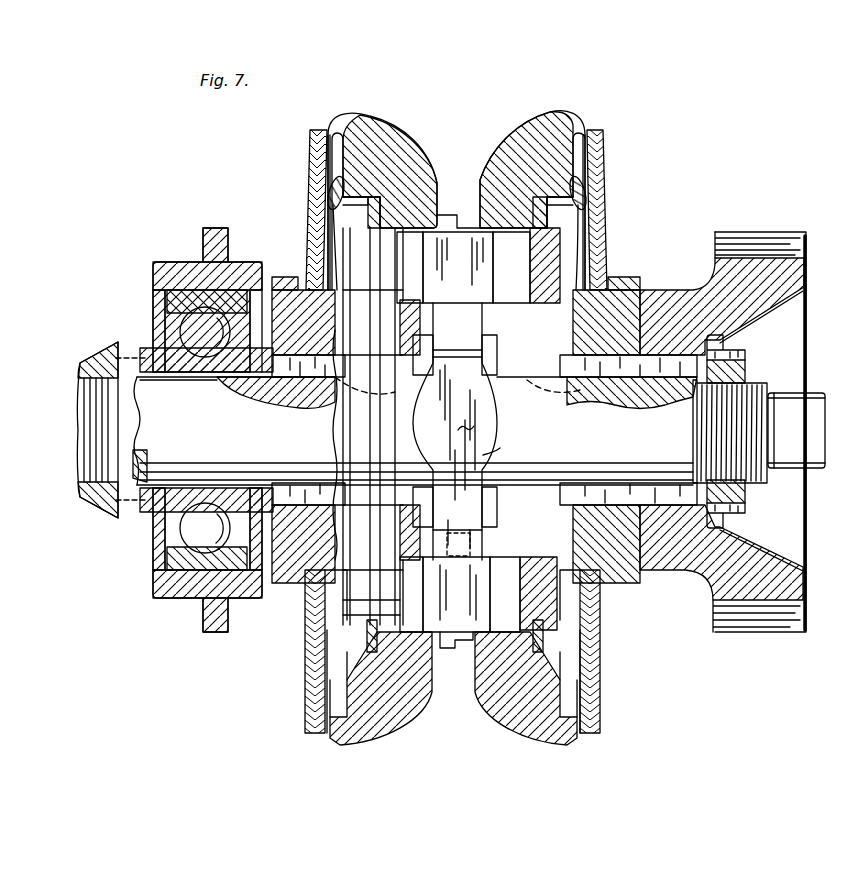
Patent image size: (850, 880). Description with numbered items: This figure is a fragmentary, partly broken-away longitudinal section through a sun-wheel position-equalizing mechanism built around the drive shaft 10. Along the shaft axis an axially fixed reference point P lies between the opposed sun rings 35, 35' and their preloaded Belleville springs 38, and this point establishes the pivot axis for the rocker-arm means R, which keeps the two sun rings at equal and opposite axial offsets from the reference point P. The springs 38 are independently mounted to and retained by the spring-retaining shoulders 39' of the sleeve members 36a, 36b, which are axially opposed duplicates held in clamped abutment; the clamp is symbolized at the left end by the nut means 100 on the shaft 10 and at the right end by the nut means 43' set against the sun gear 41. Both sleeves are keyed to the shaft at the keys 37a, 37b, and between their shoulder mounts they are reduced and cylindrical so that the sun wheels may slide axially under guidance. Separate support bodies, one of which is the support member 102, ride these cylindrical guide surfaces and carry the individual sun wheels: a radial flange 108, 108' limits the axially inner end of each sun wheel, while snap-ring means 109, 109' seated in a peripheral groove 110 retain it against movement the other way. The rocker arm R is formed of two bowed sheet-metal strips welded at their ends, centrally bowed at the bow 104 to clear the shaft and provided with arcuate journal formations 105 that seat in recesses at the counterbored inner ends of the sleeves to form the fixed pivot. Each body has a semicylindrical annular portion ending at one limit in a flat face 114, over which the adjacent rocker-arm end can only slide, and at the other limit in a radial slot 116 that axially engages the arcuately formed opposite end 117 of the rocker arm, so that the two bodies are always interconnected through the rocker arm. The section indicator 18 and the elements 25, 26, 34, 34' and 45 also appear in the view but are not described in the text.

The drive shaft 10 is at (184, 432).
The section line 18- 18 is at (430, 82).
The bearing housing 25 is at (203, 238).
The ball bearing 26 is at (176, 328).
The cup wall 34 is at (452, 212).
The roller 34' is at (457, 160).
The sun ring 35 is at (382, 191).
The sun ring 35' is at (532, 191).
The sleeve member 36a is at (312, 334).
The sleeve member 36b is at (604, 334).
The key 37a is at (306, 385).
The key 37b is at (630, 388).
The Belleville spring 38 is at (306, 212).
The spring-retaining shoulder 39' is at (461, 263).
The sun gear 41 is at (762, 227).
The nut means 43' is at (746, 431).
The key 45 is at (267, 480).
The nut means 100 is at (112, 420).
The support member 102 is at (558, 250).
The central bow 104 is at (386, 232).
The arcuate journal formation 105 is at (416, 430).
The radial flange 108 is at (398, 451).
The radial flange 108' is at (522, 436).
The snap-ring means 109 is at (388, 409).
The snap-ring means 109' is at (527, 412).
The peripheral groove 110 is at (374, 282).
The flat face 114 is at (420, 246).
The radial slot 116 is at (427, 566).
The rocker arm end 117 is at (437, 603).
The reference point P is at (470, 424).
The rocker-arm means R is at (490, 456).